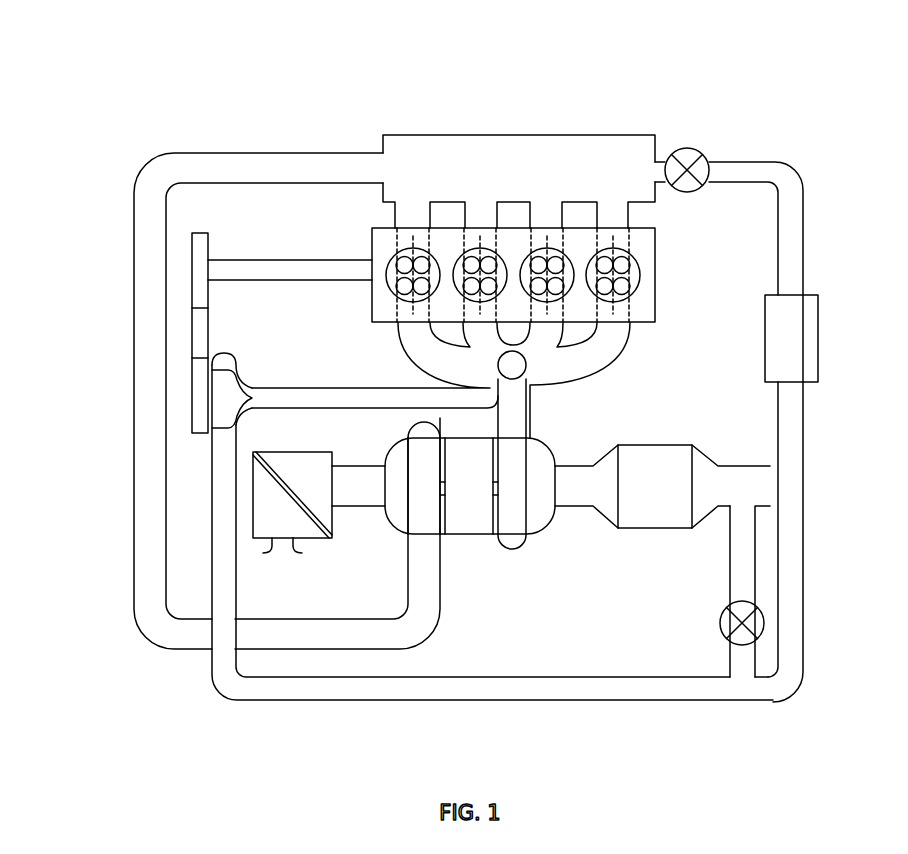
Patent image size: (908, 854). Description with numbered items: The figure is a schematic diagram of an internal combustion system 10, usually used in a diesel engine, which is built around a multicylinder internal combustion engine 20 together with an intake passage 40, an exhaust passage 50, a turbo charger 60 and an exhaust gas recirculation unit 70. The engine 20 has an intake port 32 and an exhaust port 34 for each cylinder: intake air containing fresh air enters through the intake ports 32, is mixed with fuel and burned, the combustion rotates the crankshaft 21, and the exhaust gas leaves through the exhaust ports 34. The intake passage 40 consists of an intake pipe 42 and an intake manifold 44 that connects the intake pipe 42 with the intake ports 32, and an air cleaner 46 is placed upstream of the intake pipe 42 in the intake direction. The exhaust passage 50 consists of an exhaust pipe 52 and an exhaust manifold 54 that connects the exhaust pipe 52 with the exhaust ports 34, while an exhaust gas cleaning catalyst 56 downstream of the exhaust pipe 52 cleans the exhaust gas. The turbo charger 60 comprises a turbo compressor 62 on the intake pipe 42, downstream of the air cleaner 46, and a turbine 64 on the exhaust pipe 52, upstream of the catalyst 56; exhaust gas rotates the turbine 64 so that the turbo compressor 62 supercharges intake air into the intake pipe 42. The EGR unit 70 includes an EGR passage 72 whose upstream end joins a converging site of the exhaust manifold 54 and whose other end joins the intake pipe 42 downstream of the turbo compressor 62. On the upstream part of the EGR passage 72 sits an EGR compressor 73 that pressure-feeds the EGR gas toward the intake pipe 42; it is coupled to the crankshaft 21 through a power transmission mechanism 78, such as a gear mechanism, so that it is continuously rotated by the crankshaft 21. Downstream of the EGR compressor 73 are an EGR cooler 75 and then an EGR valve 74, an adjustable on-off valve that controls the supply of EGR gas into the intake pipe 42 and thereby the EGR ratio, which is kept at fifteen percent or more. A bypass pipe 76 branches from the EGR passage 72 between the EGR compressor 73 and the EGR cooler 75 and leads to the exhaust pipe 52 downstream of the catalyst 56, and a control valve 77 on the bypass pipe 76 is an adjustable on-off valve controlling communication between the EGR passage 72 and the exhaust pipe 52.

The internal combustion system 10 is at (291, 104).
The internal combustion engine 20 is at (640, 273).
The crankshaft 21 is at (258, 270).
The intake port 32 is at (655, 238).
The exhaust port 34 is at (655, 308).
The intake passage 40 is at (130, 648).
The intake pipe 42 is at (148, 386).
The intake manifold 44 is at (412, 217).
The air cleaner 46 is at (311, 540).
The exhaust passage 50 is at (756, 430).
The exhaust pipe 52 is at (577, 497).
The exhaust manifold 54 is at (610, 349).
The exhaust gas cleaning catalyst 56 is at (660, 462).
The turbo charger 60 is at (453, 495).
The turbo compressor 62 is at (417, 507).
The turbine 64 is at (513, 541).
The exhaust gas recirculation (EGR) unit 70 is at (794, 711).
The EGR passage 72 is at (396, 692).
The EGR compressor 73 is at (227, 397).
The EGR valve 74 is at (687, 148).
The EGR cooler 75 is at (800, 331).
The bypass pipe 76 is at (738, 572).
The control valve 77 is at (728, 628).
The power transmission mechanism 78 is at (188, 308).